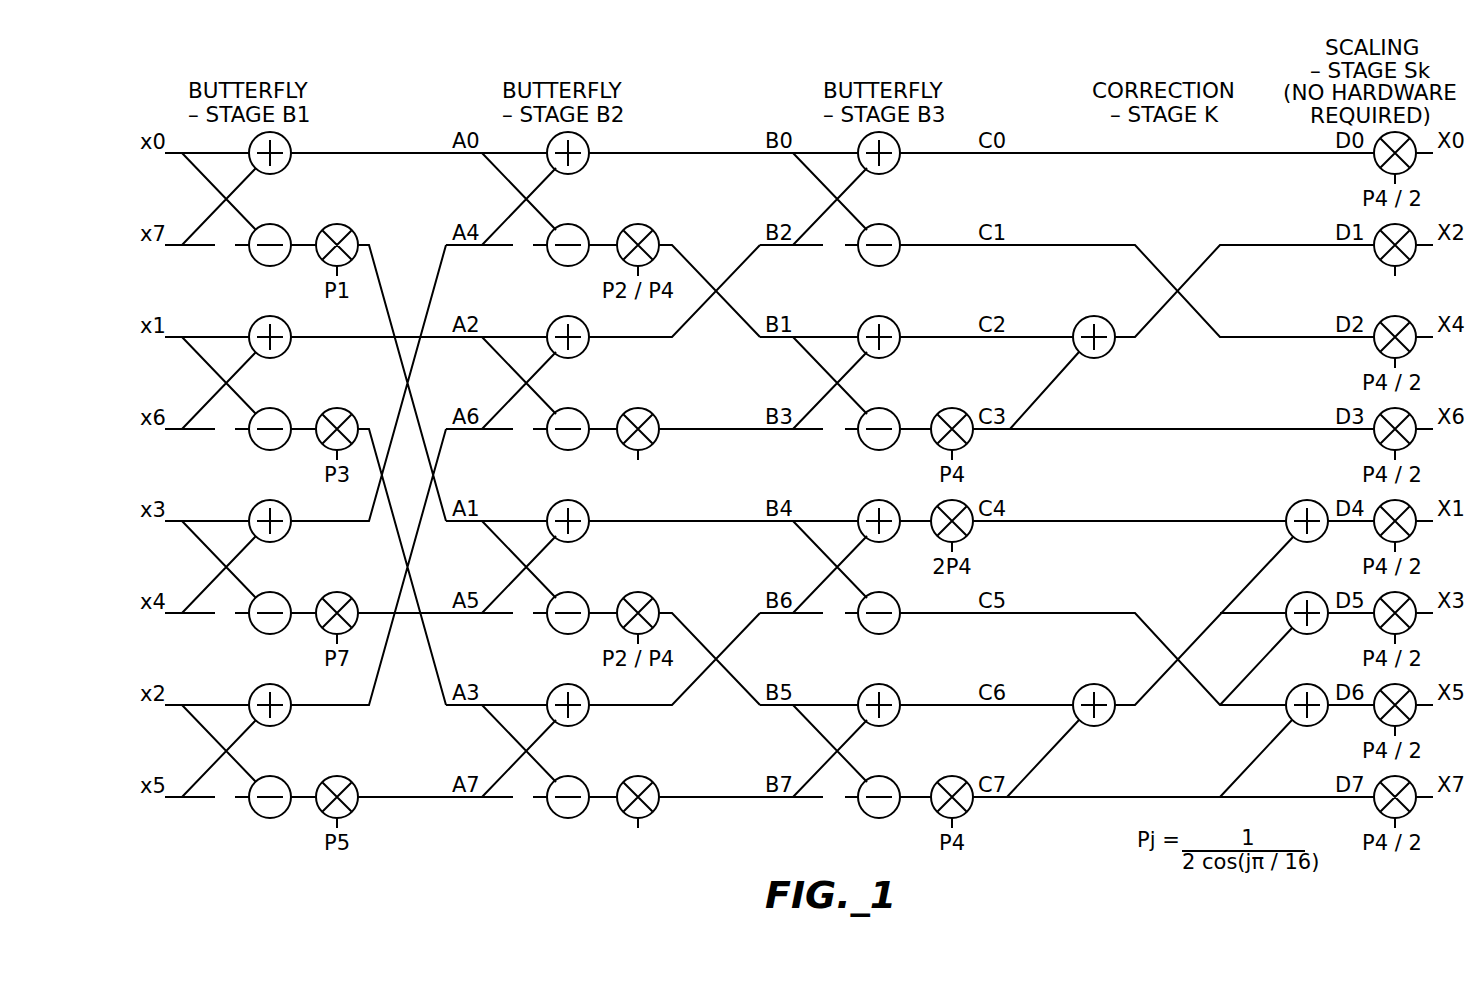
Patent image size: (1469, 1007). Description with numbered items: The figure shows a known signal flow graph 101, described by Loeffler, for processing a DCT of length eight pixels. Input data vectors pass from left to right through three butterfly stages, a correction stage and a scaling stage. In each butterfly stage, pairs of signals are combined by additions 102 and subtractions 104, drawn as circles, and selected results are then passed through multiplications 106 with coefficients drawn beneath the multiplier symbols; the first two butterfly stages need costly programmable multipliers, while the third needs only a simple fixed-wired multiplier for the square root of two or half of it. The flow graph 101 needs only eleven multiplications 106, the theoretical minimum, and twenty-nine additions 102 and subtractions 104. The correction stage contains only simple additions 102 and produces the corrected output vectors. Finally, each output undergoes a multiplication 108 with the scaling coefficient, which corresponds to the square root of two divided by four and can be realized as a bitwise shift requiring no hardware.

The signal flow graph 101 is at (509, 831).
The additions 102 is at (554, 321).
The subtractions 104 is at (573, 223).
The multiplications 106 is at (622, 444).
The multiplication with scaling coefficient 108 is at (1378, 256).